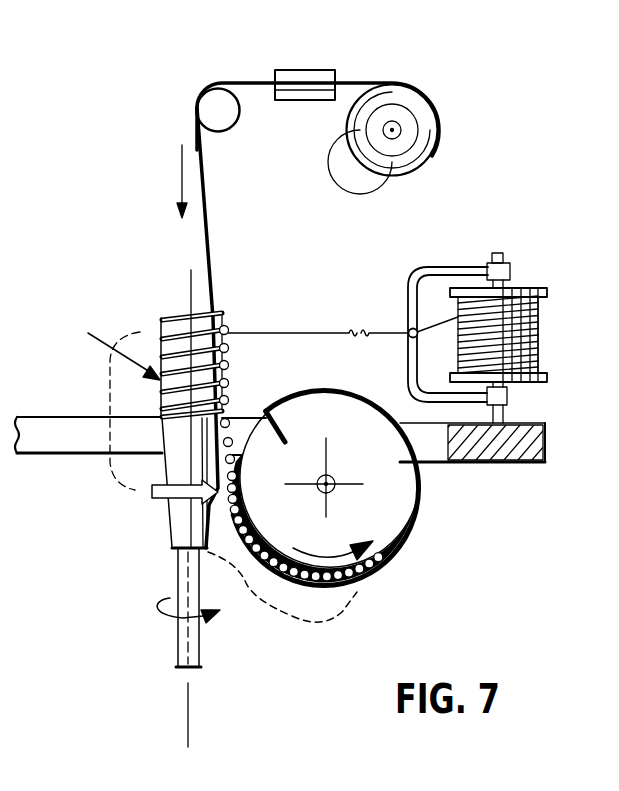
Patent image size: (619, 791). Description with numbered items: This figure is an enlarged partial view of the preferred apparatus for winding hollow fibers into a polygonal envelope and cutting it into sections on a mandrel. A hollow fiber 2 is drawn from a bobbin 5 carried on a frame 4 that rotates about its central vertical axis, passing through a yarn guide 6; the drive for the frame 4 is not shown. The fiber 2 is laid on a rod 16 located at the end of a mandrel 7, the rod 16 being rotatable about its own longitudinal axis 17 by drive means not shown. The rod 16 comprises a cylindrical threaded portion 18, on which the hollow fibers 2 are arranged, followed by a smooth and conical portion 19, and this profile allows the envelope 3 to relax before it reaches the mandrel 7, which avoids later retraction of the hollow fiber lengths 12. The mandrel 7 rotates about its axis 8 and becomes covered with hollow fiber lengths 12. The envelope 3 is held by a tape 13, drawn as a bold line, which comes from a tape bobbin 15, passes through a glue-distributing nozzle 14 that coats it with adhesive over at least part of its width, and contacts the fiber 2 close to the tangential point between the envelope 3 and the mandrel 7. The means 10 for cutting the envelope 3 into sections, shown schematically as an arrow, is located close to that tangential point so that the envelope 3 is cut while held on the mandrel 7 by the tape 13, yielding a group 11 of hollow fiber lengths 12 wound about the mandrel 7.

The hollow fiber 2 is at (265, 333).
The envelope 3 is at (106, 416).
The frame 4 is at (533, 444).
The bobbin 5 is at (530, 330).
The yarn guide 6 is at (409, 330).
The mandrel 7 is at (388, 498).
The axis of the mandrel 8 is at (335, 477).
The means for cutting the envelope into sections 10 is at (177, 502).
The group of hollow fiber lengths 11 is at (243, 590).
The hollow fiber lengths 12 is at (357, 586).
The tape 13 is at (204, 204).
The glue-distributing nozzle 14 is at (305, 71).
The tape bobbin 15 is at (425, 98).
The rod 16 is at (110, 351).
The longitudinal axis 17 is at (188, 713).
The cylindrical threaded portion 18 is at (163, 358).
The smooth and conical portion 19 is at (177, 523).